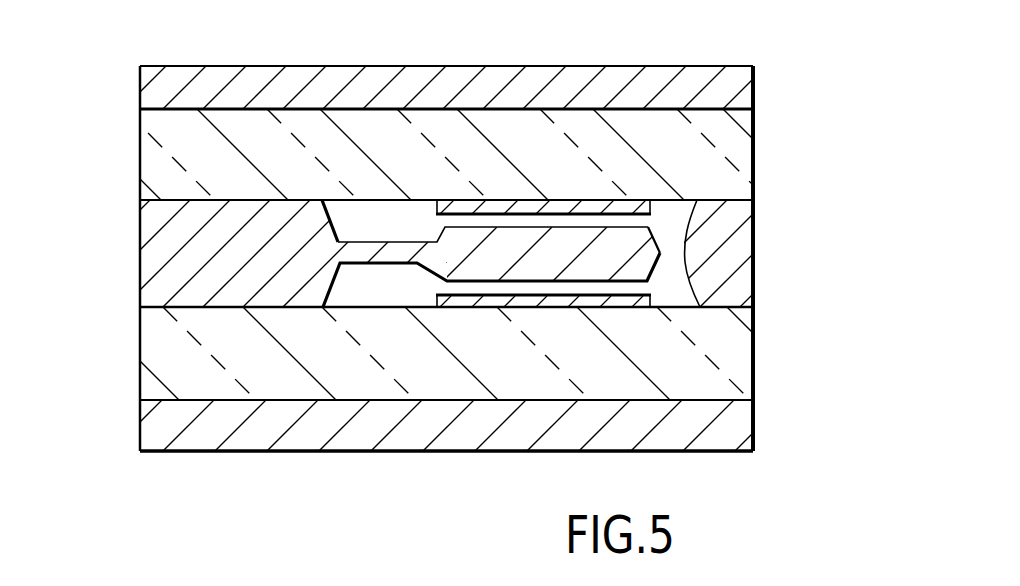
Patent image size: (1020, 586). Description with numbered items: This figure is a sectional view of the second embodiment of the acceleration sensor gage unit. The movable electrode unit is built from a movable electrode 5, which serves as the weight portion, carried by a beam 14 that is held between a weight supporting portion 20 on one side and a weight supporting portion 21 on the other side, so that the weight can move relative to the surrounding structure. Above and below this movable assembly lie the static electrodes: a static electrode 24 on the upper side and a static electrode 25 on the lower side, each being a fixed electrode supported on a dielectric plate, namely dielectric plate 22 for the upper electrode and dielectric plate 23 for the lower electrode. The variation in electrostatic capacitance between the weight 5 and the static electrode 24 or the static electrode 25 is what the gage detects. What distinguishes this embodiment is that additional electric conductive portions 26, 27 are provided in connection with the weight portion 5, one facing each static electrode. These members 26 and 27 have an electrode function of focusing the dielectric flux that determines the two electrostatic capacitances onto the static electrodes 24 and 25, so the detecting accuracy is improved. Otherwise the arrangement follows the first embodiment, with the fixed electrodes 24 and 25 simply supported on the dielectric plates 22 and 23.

The movable electrode 5 is at (560, 193).
The beam 14 is at (360, 243).
The weight supporting portion 20 is at (150, 267).
The weight supporting portion 21 is at (745, 250).
The dielectric plate 22 is at (740, 160).
The dielectric plate 23 is at (733, 365).
The static electrode 24 is at (668, 78).
The static electrode 25 is at (472, 452).
The electric conductive portion 26 is at (503, 200).
The electric conductive portion 27 is at (522, 308).